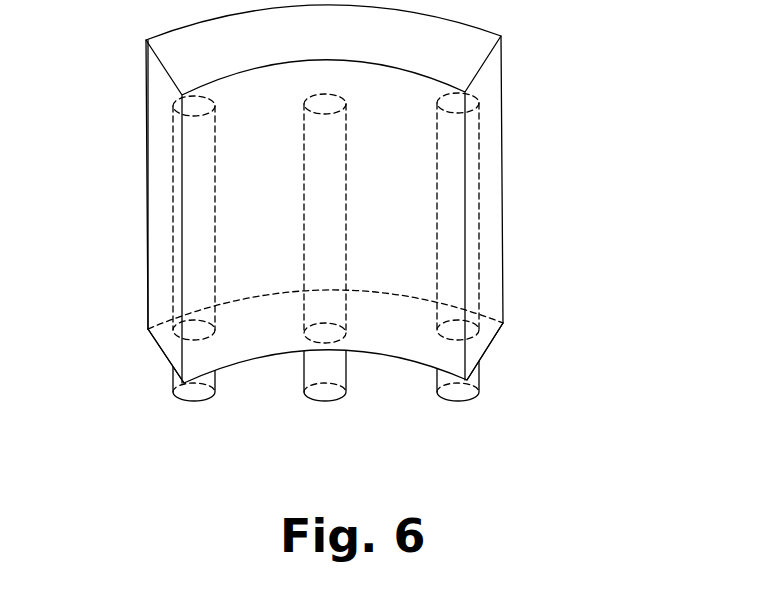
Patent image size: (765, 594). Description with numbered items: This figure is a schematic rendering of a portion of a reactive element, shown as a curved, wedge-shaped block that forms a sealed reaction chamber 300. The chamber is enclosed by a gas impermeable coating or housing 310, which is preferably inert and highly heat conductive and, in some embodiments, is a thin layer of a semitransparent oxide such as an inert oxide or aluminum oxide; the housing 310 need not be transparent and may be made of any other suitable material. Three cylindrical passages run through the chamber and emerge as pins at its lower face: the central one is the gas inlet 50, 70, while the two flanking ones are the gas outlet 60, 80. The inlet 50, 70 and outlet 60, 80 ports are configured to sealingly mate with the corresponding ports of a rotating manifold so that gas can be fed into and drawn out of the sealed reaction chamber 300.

The sealed reaction chamber 300 is at (518, 98).
The gas impermeable coating or housing 310 is at (160, 93).
The gas inlet 50 is at (335, 411).
The gas inlet 70 is at (325, 393).
The gas outlet 60 is at (332, 411).
The gas outlet 80 is at (196, 397).